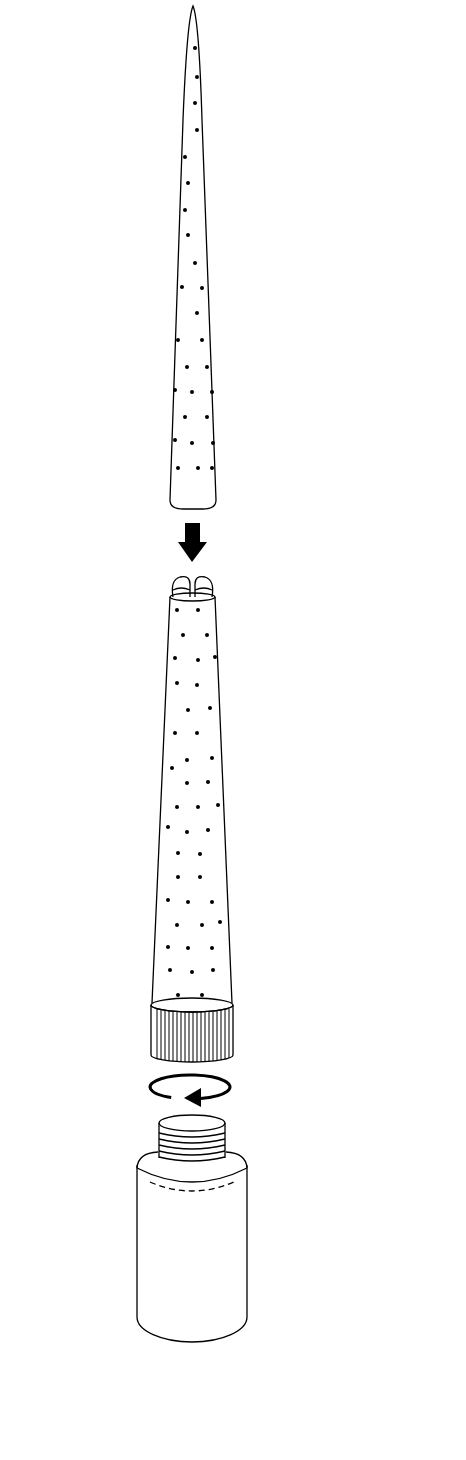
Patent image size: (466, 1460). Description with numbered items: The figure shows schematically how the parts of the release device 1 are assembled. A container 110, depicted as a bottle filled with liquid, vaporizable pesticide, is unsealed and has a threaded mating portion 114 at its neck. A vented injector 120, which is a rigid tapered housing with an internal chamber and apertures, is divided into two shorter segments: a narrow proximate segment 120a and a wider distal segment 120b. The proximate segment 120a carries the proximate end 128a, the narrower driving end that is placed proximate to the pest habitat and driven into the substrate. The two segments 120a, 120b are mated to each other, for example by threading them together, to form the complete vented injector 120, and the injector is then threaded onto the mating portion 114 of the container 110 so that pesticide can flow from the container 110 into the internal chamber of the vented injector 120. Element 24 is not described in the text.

The release device 1 is at (130, 40).
The fluid 24 is at (12, 386).
The container 110 is at (135, 1268).
The mating portion 114 is at (160, 1140).
The vented injector 120 is at (119, 476).
The proximate segment 120a is at (177, 320).
The distal segment 120b is at (167, 717).
The proximate end 128a is at (107, 258).